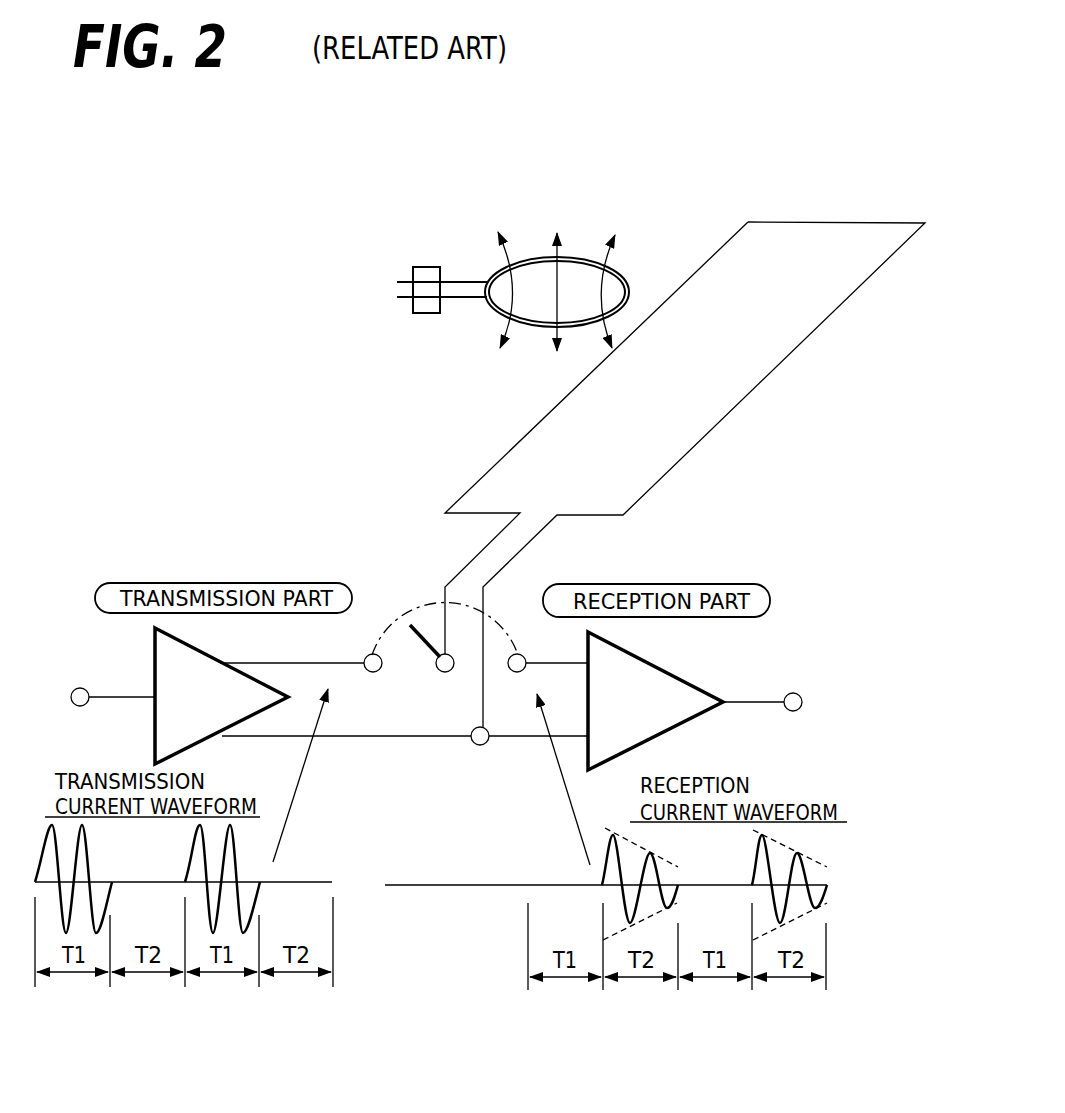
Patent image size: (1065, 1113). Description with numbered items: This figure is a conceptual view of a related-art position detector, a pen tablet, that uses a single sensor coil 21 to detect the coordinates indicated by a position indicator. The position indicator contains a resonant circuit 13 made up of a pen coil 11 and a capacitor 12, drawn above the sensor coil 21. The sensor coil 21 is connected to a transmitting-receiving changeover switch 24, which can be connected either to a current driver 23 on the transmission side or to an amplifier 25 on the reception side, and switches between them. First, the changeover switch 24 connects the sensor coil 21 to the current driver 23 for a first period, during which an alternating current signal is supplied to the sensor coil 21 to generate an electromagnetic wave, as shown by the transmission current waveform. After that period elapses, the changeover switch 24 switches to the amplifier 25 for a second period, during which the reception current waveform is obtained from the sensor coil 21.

The coil 11 is at (618, 272).
The capacitor 12 is at (407, 282).
The resonant circuit 13 is at (437, 238).
The sensor coil 21 is at (810, 338).
The current driver 23 is at (152, 663).
The transmitting-receiving changeover switch 24 is at (388, 595).
The amplifier 25 is at (660, 668).